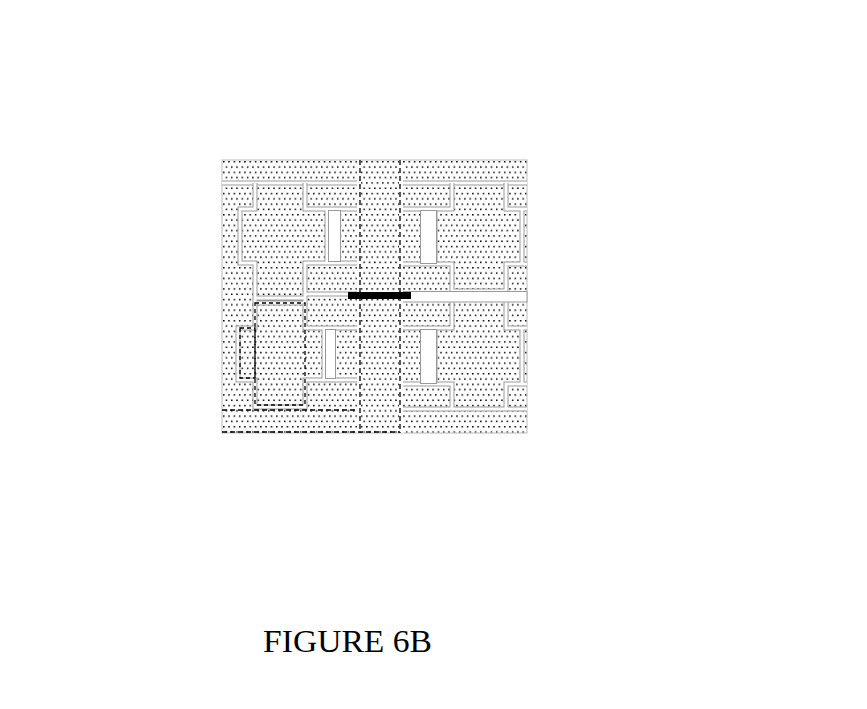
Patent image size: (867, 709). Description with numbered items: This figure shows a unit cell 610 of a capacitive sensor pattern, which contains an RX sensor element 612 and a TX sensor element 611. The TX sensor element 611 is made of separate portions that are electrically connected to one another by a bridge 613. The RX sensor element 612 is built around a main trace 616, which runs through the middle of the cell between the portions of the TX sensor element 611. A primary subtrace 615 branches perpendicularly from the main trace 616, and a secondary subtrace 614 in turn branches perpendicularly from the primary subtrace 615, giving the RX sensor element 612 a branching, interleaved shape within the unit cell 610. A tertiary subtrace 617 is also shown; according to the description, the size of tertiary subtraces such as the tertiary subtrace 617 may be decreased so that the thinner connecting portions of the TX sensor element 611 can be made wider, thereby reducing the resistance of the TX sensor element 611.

The unit cell 610 is at (646, 160).
The TX sensor element 611 is at (231, 291).
The RX sensor element 612 is at (377, 161).
The bridge 613 is at (412, 297).
The secondary subtrace 614 is at (270, 394).
The primary subtrace 615 is at (326, 425).
The main trace 616 is at (390, 397).
The tertiary subtrace 617 is at (246, 354).